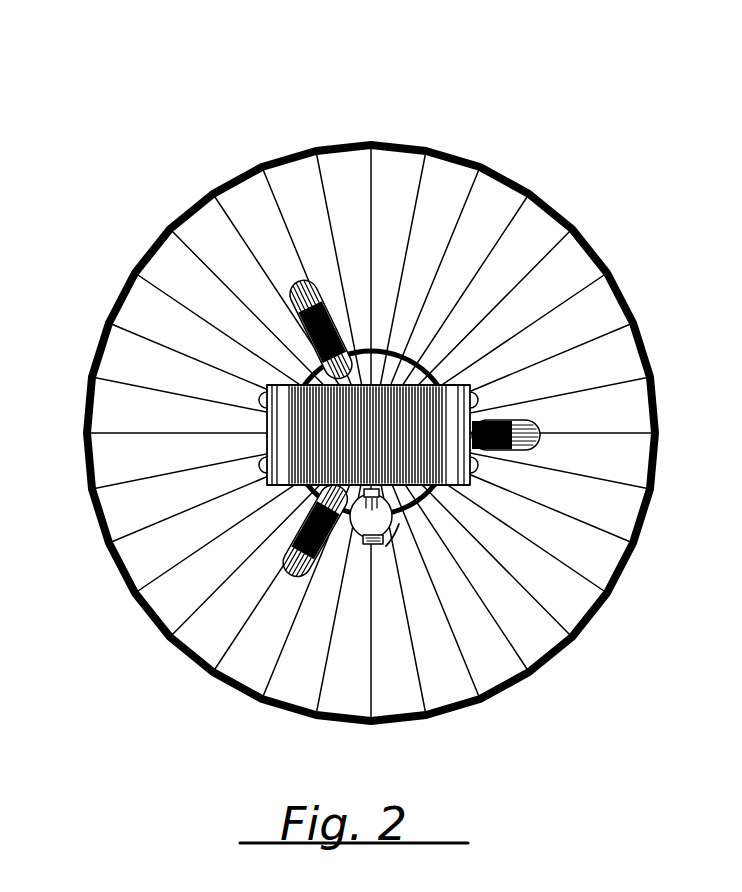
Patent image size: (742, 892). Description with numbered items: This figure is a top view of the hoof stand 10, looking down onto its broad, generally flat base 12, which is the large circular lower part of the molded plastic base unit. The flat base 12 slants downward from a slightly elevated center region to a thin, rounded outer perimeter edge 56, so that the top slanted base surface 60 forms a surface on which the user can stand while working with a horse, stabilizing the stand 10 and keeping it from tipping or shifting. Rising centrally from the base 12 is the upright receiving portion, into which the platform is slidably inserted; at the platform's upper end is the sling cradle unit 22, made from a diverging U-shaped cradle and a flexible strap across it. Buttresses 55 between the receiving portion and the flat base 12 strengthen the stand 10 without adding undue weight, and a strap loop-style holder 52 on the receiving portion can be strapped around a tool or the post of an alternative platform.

The stand 10 is at (206, 108).
The flat base 12 is at (702, 288).
The sling cradle unit 22 is at (254, 430).
The strap loop-style holder 52 is at (364, 536).
The buttresses 55 is at (316, 308).
The outer perimeter edge 56 is at (520, 190).
The top slanted base surface 60 is at (511, 570).